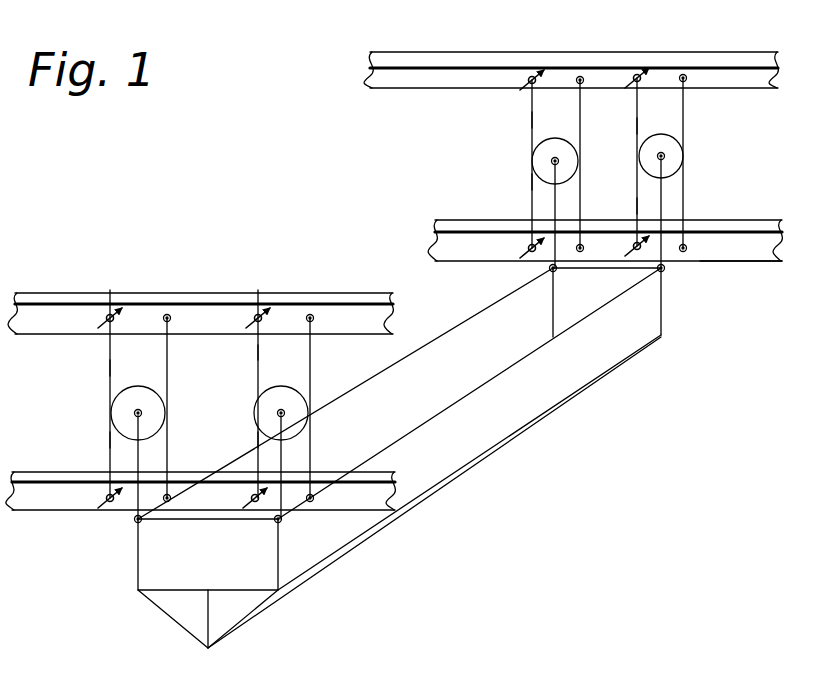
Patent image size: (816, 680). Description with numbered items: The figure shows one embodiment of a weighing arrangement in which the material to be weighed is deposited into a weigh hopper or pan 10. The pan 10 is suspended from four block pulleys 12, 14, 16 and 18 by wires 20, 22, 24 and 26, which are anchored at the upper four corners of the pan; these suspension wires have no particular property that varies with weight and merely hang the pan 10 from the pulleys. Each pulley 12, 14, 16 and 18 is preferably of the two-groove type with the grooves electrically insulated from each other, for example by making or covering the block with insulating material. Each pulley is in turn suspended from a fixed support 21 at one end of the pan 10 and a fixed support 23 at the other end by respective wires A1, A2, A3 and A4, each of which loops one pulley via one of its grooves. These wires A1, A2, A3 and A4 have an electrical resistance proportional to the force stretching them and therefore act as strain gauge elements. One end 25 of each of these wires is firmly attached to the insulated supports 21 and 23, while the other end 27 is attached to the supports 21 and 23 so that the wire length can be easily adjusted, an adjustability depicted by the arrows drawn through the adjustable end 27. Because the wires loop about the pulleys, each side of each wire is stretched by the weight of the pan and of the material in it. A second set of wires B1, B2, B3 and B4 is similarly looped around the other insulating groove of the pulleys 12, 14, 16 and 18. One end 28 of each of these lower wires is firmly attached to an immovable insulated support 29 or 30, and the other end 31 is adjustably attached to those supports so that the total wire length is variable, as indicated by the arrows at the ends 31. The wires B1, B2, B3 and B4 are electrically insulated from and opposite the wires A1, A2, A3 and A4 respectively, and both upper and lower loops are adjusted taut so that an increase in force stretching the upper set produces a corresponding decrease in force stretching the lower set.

The weigh pan 10 is at (522, 414).
The block pulley 12 is at (162, 418).
The block pulley 14 is at (300, 414).
The block pulley 16 is at (578, 165).
The block pulley 18 is at (681, 162).
The wire 20 is at (138, 455).
The fixed support 21 is at (226, 292).
The wire 22 is at (258, 455).
The fixed support 23 is at (604, 55).
The wire 24 is at (555, 200).
The fixed end of wire 25 is at (172, 325).
The wire 26 is at (662, 200).
The adjustable end of wire 27 is at (116, 302).
The fixed end of wire 28 is at (172, 499).
The immovable insulated support 29 is at (65, 505).
The immovable insulated support 30 is at (752, 262).
The adjustable end of wire 31 is at (110, 505).
The wire A1 is at (110, 368).
The wire A2 is at (258, 352).
The wire A3 is at (532, 120).
The wire A4 is at (637, 127).
The wire B1 is at (110, 440).
The wire B2 is at (258, 440).
The wire B3 is at (532, 182).
The wire B4 is at (637, 205).